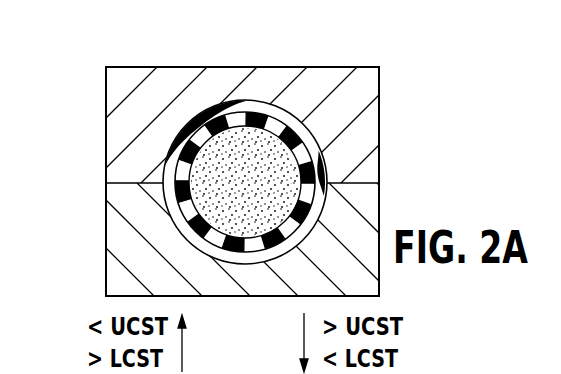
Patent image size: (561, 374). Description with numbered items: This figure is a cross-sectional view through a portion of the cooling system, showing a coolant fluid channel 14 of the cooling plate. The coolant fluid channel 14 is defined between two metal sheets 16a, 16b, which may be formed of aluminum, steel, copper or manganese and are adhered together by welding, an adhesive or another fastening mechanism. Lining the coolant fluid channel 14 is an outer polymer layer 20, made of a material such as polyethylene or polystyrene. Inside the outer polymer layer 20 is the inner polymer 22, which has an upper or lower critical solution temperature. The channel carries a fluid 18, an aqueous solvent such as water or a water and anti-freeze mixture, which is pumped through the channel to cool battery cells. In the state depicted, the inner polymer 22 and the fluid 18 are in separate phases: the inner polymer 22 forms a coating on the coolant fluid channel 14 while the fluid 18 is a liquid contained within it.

The coolant fluid channel 14 is at (240, 100).
The metal sheet 16a is at (295, 88).
The metal sheet 16b is at (130, 245).
The fluid 18 is at (276, 150).
The outer polymer layer 20 is at (317, 163).
The inner polymer 22 is at (293, 221).